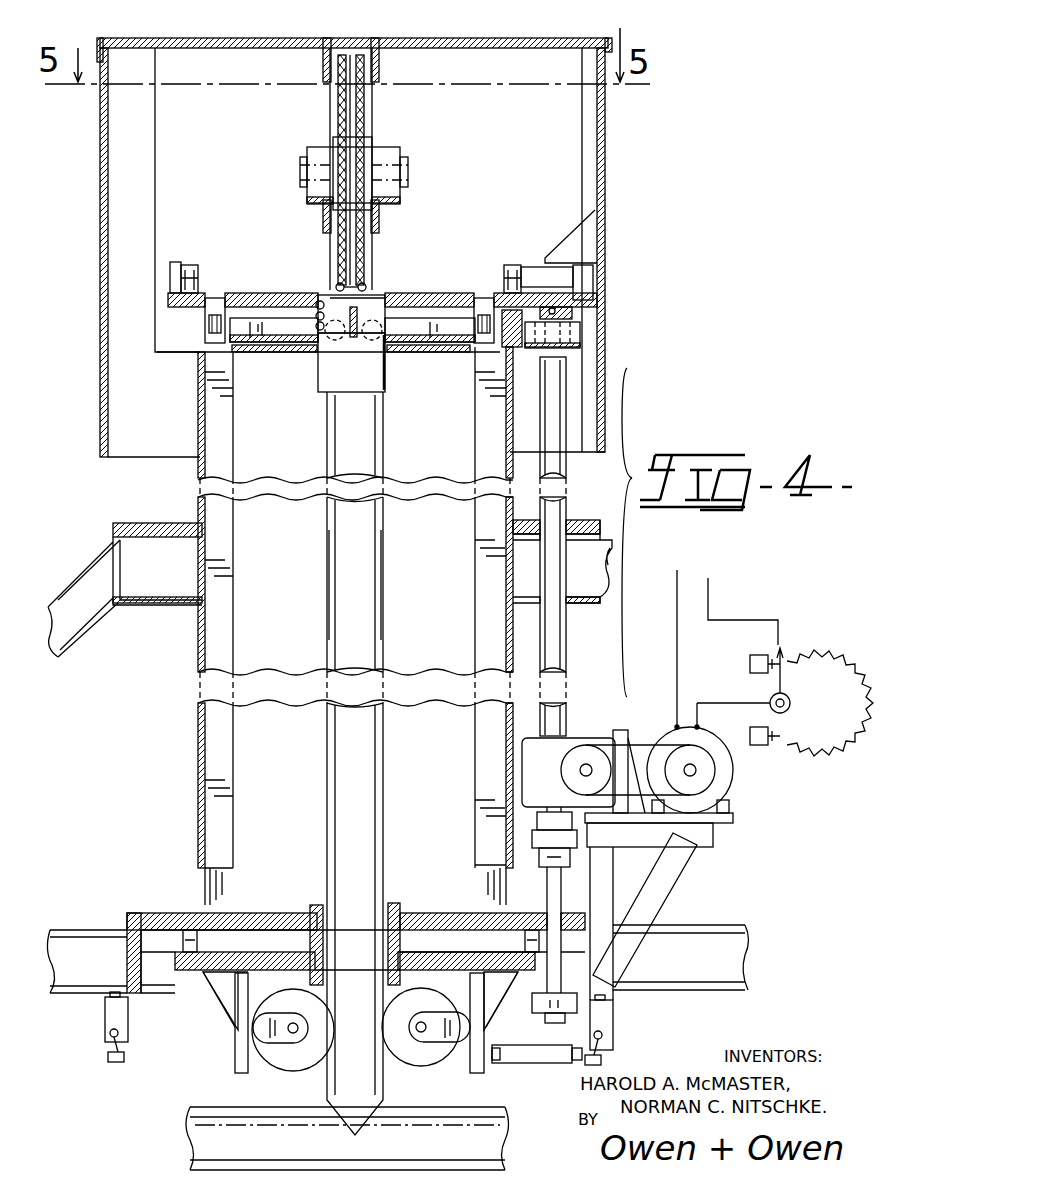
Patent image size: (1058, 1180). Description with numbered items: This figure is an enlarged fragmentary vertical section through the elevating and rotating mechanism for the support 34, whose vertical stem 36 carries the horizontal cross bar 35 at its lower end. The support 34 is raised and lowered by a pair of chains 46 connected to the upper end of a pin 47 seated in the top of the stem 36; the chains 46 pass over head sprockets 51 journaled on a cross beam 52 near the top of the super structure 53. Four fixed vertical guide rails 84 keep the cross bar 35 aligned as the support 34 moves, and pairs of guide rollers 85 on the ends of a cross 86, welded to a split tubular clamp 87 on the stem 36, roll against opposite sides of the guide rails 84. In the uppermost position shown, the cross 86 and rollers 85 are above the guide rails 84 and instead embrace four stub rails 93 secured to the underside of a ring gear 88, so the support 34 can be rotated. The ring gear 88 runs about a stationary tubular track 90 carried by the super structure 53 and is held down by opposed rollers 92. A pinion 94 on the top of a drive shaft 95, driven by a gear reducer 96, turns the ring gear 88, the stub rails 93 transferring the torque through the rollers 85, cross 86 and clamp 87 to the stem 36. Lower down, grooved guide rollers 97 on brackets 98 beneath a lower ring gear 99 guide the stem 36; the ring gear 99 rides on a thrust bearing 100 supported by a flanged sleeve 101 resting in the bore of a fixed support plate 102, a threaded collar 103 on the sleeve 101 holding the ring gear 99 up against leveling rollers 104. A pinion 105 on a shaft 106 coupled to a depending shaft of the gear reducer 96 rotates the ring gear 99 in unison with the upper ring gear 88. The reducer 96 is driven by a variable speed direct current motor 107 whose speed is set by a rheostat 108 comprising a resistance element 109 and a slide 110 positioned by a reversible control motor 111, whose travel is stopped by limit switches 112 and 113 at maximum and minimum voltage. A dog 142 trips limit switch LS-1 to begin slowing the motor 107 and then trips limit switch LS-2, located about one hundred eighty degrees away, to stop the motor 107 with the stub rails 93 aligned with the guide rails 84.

The support 34 is at (316, 577).
The cross bar 35 is at (200, 1112).
The stem 36 is at (384, 418).
The chains 46 is at (359, 164).
The pin 47 is at (355, 280).
The head sprockets 51 is at (365, 110).
The cross beam 52 is at (400, 205).
The super structure 53 is at (92, 219).
The guide rails 84 is at (235, 637).
The guide rollers 85 is at (315, 318).
The cross 86 is at (388, 345).
The tubular clamp 87 is at (385, 300).
The ring gear 88 is at (215, 293).
The tubular track 90 is at (522, 348).
The opposed rollers 92 is at (210, 243).
The stub rails 93 is at (215, 345).
The pinion 94 is at (577, 300).
The drive shaft 95 is at (565, 378).
The gear reducer 96 is at (570, 740).
The guide rollers 97 is at (280, 1070).
The brackets 98 is at (235, 1045).
The lower ring gear 99 is at (183, 975).
The thrust bearing 100 is at (312, 907).
The flanged sleeve 101 is at (405, 913).
The support plate 102 is at (165, 913).
The threaded collar 103 is at (400, 980).
The leveling rollers 104 is at (197, 945).
The pinion 105 is at (600, 963).
The shaft 106 is at (565, 880).
The motor 107 is at (722, 790).
The rheostat 108 is at (814, 756).
The resistance element 109 is at (840, 640).
The slide 110 is at (782, 687).
The control motor 111 is at (772, 700).
The limit switch 112 is at (757, 640).
The limit switch 113 is at (753, 745).
The dog 142 is at (548, 1033).
The limit switch LS-1 is at (105, 1027).
The limit switch LS-2 is at (613, 1025).